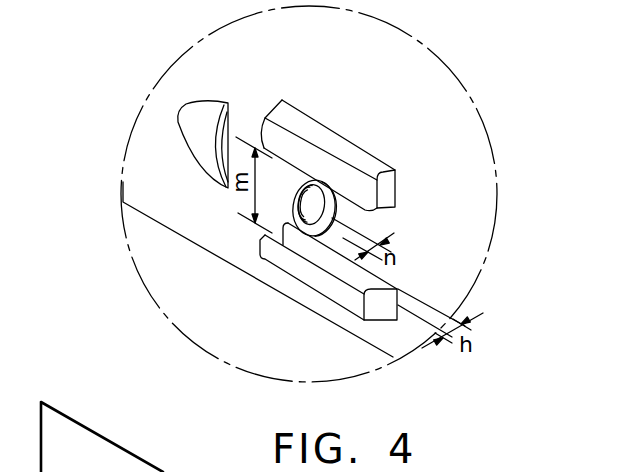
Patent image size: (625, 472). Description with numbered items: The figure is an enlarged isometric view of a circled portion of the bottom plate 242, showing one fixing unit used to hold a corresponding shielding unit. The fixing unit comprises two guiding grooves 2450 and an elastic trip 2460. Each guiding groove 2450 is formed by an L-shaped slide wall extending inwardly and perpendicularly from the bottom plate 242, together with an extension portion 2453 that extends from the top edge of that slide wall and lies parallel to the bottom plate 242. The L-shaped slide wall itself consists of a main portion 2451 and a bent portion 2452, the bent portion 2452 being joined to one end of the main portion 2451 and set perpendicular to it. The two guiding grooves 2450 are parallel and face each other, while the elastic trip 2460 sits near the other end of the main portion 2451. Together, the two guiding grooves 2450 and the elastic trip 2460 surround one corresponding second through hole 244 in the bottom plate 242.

The bottom plate 242 is at (453, 165).
The second through hole 244 is at (323, 205).
The guiding groove 2450 is at (305, 272).
The main portion 2451 is at (343, 152).
The bent portion 2452 is at (387, 191).
The extension portion 2453 is at (350, 182).
The elastic trip 2460 is at (197, 128).